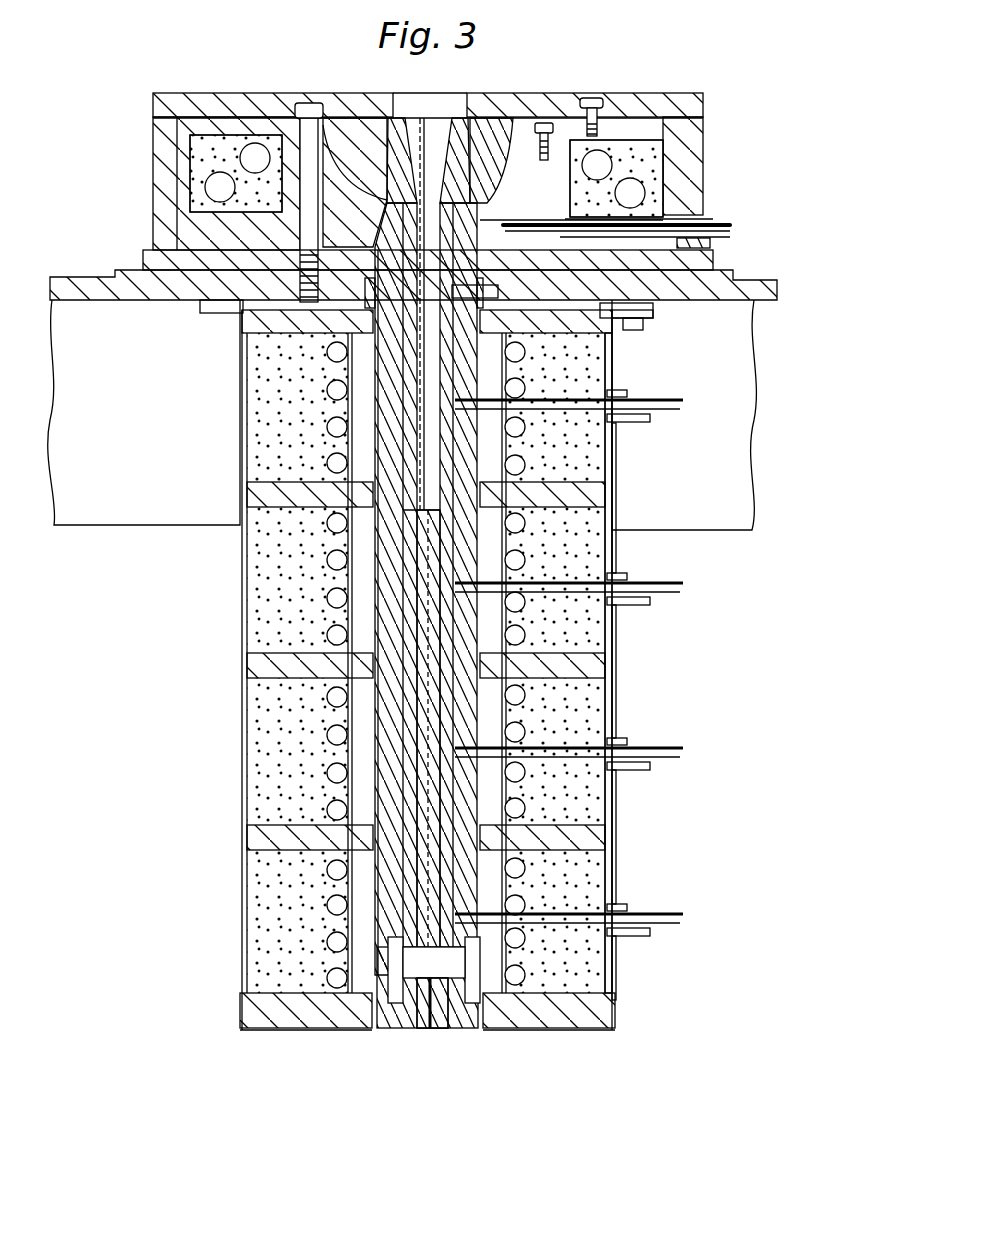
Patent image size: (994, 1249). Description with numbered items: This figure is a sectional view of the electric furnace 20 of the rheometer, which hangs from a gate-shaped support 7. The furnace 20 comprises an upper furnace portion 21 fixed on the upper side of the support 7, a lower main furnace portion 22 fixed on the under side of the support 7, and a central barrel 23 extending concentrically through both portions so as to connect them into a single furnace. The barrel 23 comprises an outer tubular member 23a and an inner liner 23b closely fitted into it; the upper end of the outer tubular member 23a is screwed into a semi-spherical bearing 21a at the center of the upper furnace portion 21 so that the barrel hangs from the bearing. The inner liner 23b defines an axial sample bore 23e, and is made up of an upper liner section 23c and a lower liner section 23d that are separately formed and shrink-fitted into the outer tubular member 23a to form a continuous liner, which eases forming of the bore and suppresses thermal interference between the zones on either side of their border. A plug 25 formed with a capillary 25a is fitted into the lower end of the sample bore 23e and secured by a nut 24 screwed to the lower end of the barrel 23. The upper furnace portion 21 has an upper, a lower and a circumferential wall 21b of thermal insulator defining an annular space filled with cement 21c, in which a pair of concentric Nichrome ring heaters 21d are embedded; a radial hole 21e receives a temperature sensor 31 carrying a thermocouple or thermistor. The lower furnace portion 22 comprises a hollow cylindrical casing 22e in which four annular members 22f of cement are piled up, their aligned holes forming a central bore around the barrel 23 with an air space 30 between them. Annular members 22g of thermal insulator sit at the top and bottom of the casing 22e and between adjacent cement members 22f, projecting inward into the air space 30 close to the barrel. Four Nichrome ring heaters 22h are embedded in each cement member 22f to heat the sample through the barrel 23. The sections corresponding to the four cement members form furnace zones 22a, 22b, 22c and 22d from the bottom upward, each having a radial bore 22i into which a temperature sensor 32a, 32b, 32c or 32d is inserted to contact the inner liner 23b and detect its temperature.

The electric furnace 20 is at (782, 233).
The upper furnace portion 21 is at (705, 135).
The semi-spherical bearing 21a is at (498, 160).
The upper, lower and circumferential wall 21b is at (158, 110).
The cement 21c is at (256, 205).
The Nichrome ring heaters 21d is at (220, 172).
The radial hole 21e is at (468, 188).
The temperature sensor 31 is at (730, 226).
The gate-shaped support 7 is at (760, 280).
The lower main furnace portion 22 is at (742, 548).
The furnace zone 22a is at (618, 886).
The furnace zone 22b is at (618, 780).
The furnace zone 22c is at (618, 615).
The furnace zone 22d is at (618, 445).
The hollow cylindrical casing 22e is at (612, 700).
The annular members of cement 22f is at (250, 505).
The annular members of thermal insulator 22g is at (607, 355).
The Nichrome ring heaters 22h is at (330, 463).
The radial bore 22i is at (608, 383).
The temperature sensor 32a is at (683, 915).
The temperature sensor 32b is at (680, 750).
The temperature sensor 32c is at (683, 583).
The temperature sensor 32d is at (683, 401).
The central barrel 23 is at (372, 716).
The outer tubular member 23a is at (385, 615).
The inner liner 23b is at (121, 537).
The upper liner section 23c is at (418, 565).
The lower liner section 23d is at (418, 587).
The axial bore 23e is at (430, 690).
The air space 30 is at (375, 885).
The nut 24 is at (400, 1020).
The plug 25 is at (422, 1024).
The capillary 25a is at (436, 1024).